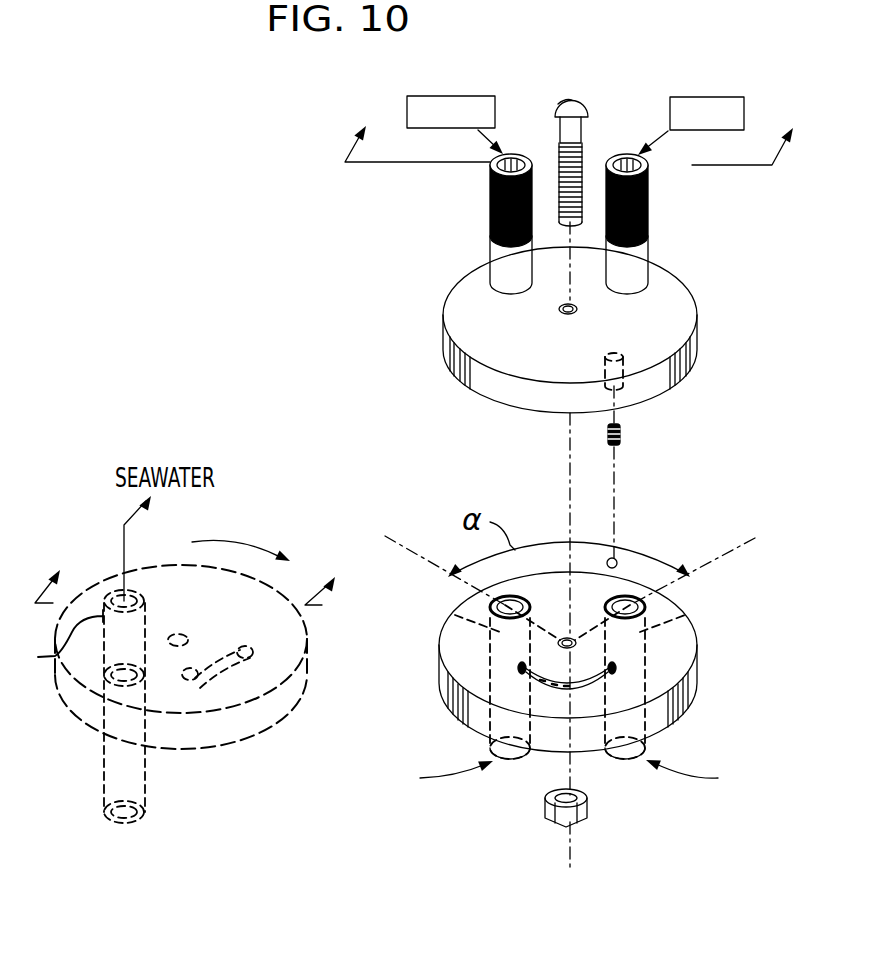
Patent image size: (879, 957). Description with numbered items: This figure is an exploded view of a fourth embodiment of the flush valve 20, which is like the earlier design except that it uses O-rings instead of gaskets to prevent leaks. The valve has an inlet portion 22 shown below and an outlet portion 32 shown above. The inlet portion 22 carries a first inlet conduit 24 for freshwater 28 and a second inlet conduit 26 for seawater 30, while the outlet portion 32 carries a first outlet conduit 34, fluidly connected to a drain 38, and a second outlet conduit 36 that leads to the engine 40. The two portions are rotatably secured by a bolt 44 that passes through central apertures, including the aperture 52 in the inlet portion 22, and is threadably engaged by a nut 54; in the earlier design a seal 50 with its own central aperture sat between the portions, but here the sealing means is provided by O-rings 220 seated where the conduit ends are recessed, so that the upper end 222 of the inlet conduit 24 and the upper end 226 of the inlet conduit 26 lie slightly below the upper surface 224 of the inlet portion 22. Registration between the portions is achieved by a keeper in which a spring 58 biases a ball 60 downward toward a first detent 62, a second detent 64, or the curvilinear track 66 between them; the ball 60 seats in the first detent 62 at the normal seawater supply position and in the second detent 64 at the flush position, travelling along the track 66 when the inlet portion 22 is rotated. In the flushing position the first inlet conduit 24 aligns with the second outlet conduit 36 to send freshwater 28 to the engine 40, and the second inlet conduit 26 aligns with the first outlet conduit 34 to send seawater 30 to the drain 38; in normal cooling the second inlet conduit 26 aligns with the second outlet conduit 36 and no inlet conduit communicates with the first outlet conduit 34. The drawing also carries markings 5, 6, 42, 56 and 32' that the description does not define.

The section line 5- 5 is at (578, 132).
The section line 6- 6 is at (197, 573).
The flush valve 20 is at (762, 359).
The inlet portion 22 is at (690, 708).
The first inlet conduit 24 is at (508, 760).
The second inlet conduit 26 is at (630, 762).
The freshwater 28 is at (440, 755).
The seawater 30 is at (692, 778).
The outlet portion 32 is at (603, 330).
The alternative upper plate 32' is at (185, 676).
The first outlet conduit 34 is at (650, 252).
The second outlet conduit 36 is at (492, 250).
The drain 38 is at (703, 97).
The engine 40 is at (462, 96).
The pivot bolt 42 is at (584, 96).
The bolt 44 is at (578, 308).
The seal 50 is at (558, 645).
The aperture 52 is at (572, 825).
The nut 54 is at (620, 442).
The detent ball 56 is at (617, 560).
The spring 58 is at (642, 668).
The ball 60 is at (522, 670).
The first detent 62 is at (620, 430).
The second detent 64 is at (604, 370).
The track 66 is at (590, 686).
The O-rings 220 is at (490, 602).
The upper end of inlet conduit 24 222 is at (460, 614).
The upper surface of inlet portion 224 is at (697, 668).
The upper end of inlet conduit 26 226 is at (687, 620).